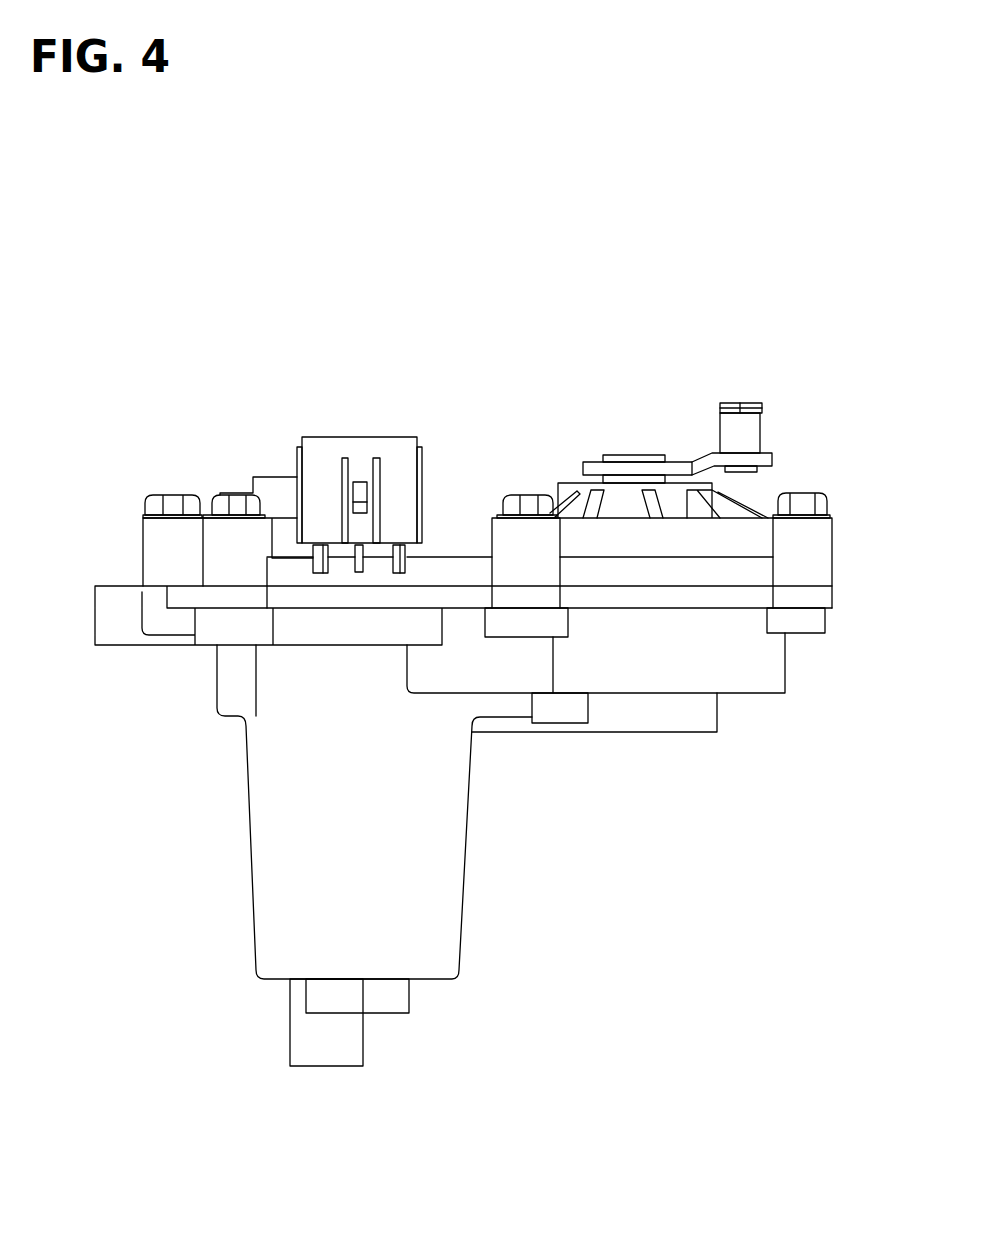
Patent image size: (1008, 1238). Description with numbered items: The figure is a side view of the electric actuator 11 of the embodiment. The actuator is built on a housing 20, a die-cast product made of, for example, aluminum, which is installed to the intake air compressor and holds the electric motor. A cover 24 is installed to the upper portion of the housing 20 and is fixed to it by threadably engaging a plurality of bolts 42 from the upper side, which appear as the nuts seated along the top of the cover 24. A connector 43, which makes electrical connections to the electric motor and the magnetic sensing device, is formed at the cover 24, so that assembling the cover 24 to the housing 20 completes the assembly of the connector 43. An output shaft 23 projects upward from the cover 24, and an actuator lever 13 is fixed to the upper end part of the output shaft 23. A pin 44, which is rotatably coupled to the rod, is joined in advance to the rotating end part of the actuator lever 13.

The electric actuator 11 is at (270, 433).
The bolts 42 is at (217, 497).
The connector 43 is at (389, 440).
The output shaft 23 is at (626, 455).
The pin 44 is at (739, 427).
The actuator lever 13 is at (769, 465).
The cover 24 is at (817, 553).
The housing 20 is at (776, 662).